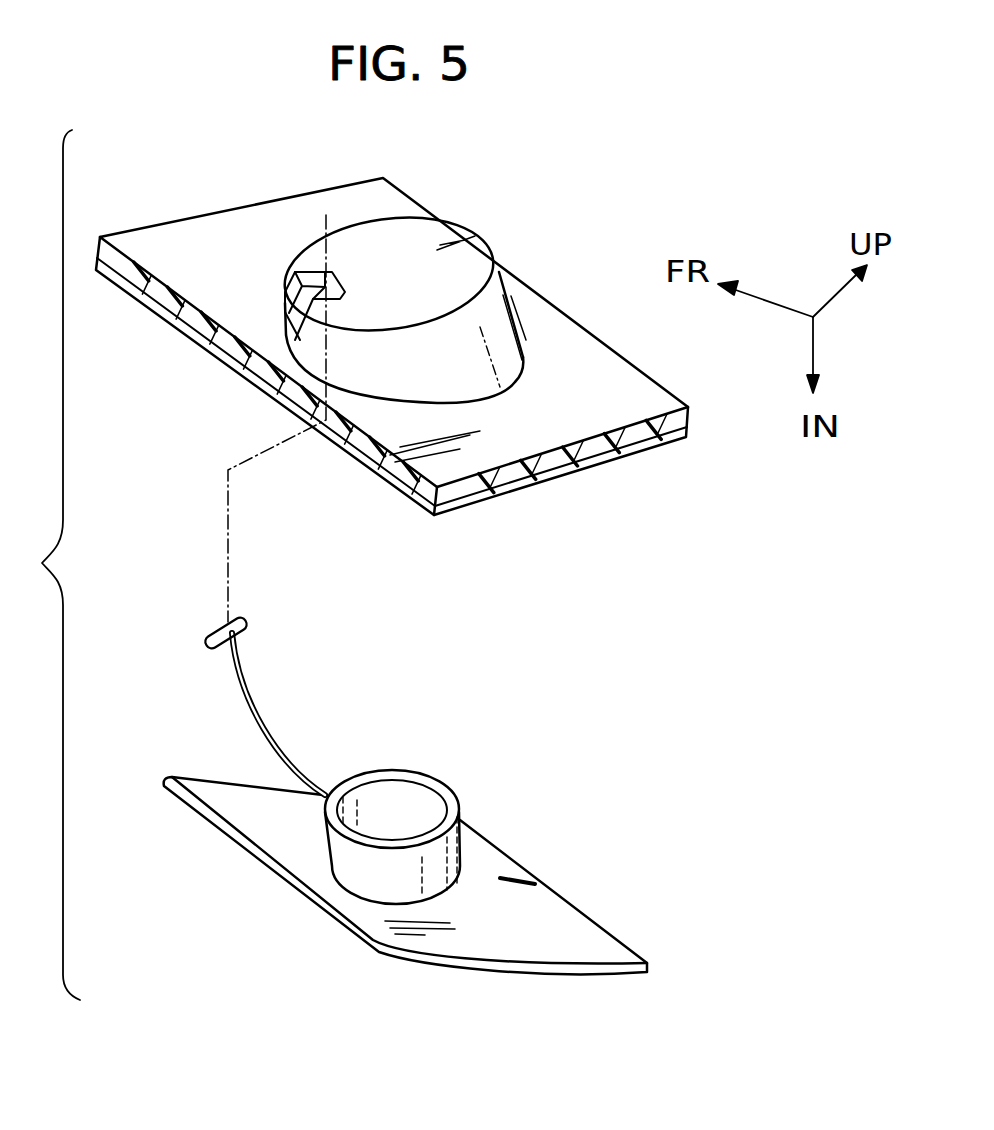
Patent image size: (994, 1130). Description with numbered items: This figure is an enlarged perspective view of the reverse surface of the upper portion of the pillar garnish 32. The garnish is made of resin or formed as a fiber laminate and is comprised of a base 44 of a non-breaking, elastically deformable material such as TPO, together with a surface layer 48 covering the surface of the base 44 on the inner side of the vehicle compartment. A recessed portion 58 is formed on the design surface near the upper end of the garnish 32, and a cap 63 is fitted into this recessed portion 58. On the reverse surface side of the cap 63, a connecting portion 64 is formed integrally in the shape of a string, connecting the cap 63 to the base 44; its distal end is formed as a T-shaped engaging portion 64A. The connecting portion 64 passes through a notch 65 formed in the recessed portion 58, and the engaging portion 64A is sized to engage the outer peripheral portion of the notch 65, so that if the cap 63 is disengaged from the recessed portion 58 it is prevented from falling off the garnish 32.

The pillar garnish 32 is at (610, 482).
The base 44 is at (531, 470).
The surface layer 48 is at (509, 494).
The recessed portion 58 is at (482, 272).
The notch 65 is at (287, 283).
The cap 63 is at (303, 916).
The connecting portion 64 is at (277, 743).
The engaging portion 64A is at (247, 622).